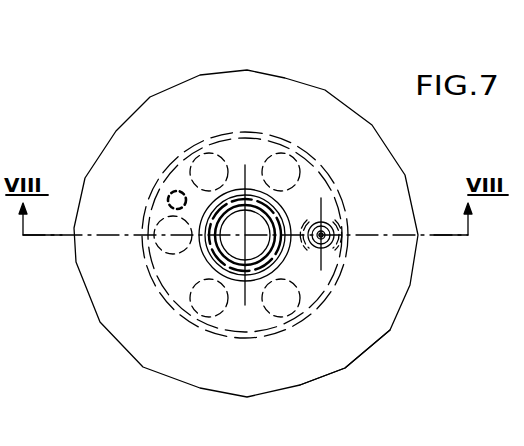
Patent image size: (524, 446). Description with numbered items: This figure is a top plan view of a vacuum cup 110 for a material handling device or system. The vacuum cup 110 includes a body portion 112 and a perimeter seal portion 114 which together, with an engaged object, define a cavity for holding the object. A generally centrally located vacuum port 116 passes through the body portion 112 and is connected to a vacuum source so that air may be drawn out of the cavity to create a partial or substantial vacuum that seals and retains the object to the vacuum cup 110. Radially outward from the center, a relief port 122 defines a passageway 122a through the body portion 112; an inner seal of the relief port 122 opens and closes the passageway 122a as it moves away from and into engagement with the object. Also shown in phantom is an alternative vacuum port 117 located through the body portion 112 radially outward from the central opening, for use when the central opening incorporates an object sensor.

The vacuum cup 110 is at (346, 92).
The body portion 112 is at (240, 308).
The perimeter seal portion 114 is at (338, 340).
The vacuum port 116 is at (250, 212).
The vacuum port 117 is at (168, 182).
The relief port 122 is at (325, 215).
The passageway 122a is at (322, 237).